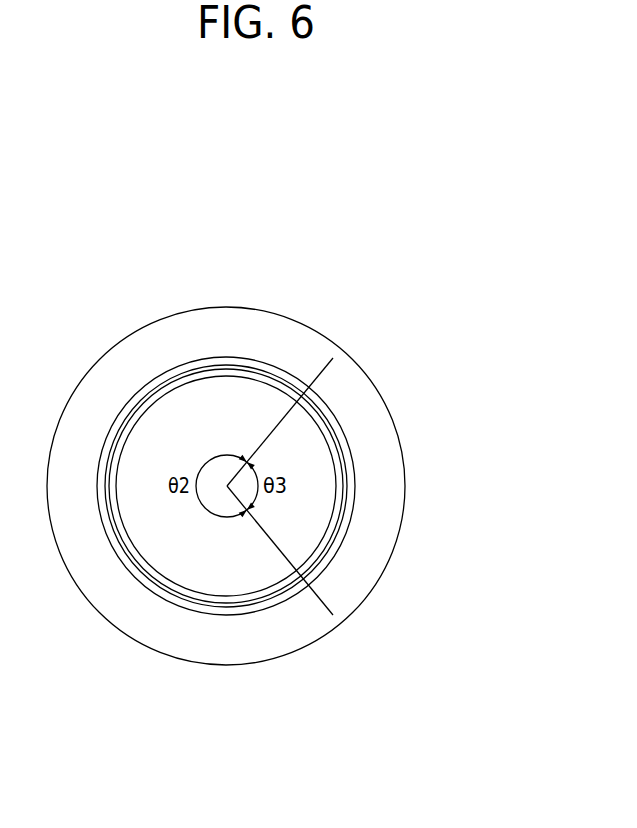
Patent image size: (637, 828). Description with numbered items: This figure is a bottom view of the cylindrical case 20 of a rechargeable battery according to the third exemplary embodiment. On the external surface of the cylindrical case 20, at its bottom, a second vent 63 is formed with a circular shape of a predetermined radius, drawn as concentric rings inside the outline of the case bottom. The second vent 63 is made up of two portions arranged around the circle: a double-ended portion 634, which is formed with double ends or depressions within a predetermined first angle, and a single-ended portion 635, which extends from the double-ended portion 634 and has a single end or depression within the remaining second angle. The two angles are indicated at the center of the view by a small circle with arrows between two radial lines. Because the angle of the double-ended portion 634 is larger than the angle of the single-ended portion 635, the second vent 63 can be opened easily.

The cylindrical case 20 is at (382, 483).
The second vent 63 is at (229, 565).
The double-ended portion 634 is at (225, 614).
The single-ended portion 635 is at (327, 555).